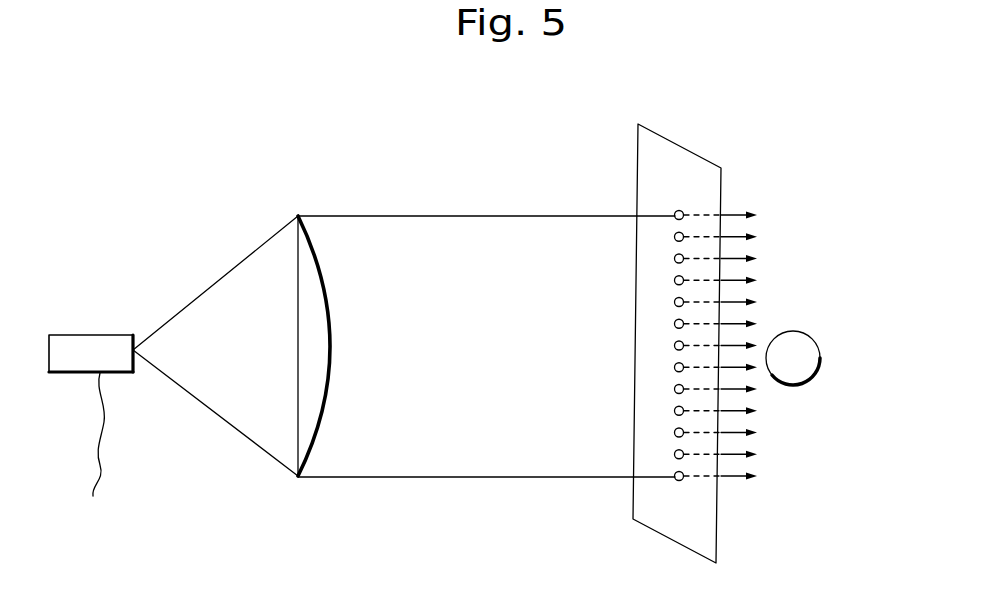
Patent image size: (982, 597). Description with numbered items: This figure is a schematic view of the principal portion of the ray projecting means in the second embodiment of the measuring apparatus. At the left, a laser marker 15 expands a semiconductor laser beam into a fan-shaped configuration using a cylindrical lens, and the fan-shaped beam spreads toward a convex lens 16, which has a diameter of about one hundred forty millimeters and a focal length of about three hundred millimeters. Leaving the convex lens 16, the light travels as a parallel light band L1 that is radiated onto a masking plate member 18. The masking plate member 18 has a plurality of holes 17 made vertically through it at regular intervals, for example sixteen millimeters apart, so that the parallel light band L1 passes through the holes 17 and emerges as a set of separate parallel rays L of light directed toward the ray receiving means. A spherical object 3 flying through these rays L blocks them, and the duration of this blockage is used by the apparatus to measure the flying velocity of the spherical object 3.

The laser marker 15 is at (101, 331).
The convex lens 16 is at (328, 372).
The holes 17 is at (684, 213).
The masking plate member 18 is at (683, 156).
The spherical object 3 is at (810, 376).
The rays of light L is at (745, 212).
The parallel light band L1 is at (479, 460).